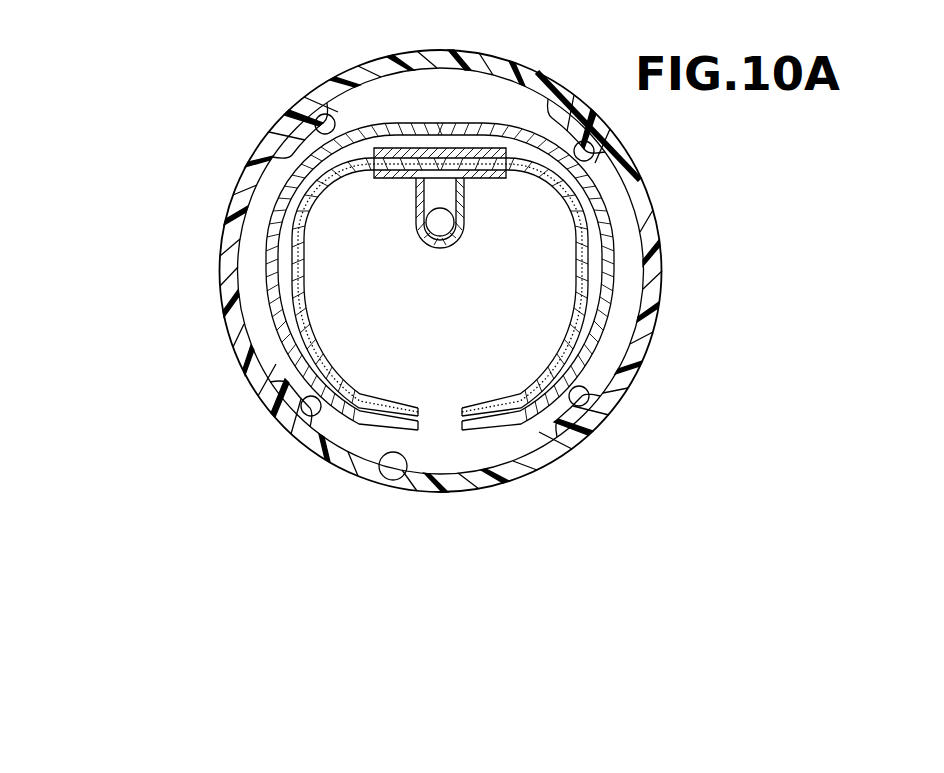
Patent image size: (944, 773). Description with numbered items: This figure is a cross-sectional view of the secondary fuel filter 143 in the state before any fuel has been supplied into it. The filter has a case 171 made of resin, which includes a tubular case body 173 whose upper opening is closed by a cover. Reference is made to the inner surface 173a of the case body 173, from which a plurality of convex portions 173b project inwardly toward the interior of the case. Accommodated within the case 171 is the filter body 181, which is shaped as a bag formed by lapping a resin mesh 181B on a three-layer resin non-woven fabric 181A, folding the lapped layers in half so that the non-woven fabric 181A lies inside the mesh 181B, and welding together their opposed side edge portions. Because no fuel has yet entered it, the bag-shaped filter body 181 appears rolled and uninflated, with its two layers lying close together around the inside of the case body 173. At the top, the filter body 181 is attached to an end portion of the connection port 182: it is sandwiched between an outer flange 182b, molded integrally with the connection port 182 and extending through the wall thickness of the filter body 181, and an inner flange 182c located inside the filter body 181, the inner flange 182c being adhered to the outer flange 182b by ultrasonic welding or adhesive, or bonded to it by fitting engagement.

The secondary fuel filter 143 is at (197, 130).
The case 171 is at (257, 113).
The case body 173 is at (230, 195).
The inner surface of the case body 173a is at (397, 480).
The convex portions 173b is at (315, 114).
The filter body 181 is at (493, 123).
The non-woven fabric 181A is at (283, 283).
The mesh 181B is at (283, 305).
The connection port 182 is at (437, 250).
The outer flange 182b is at (383, 178).
The inner flange 182c is at (383, 148).